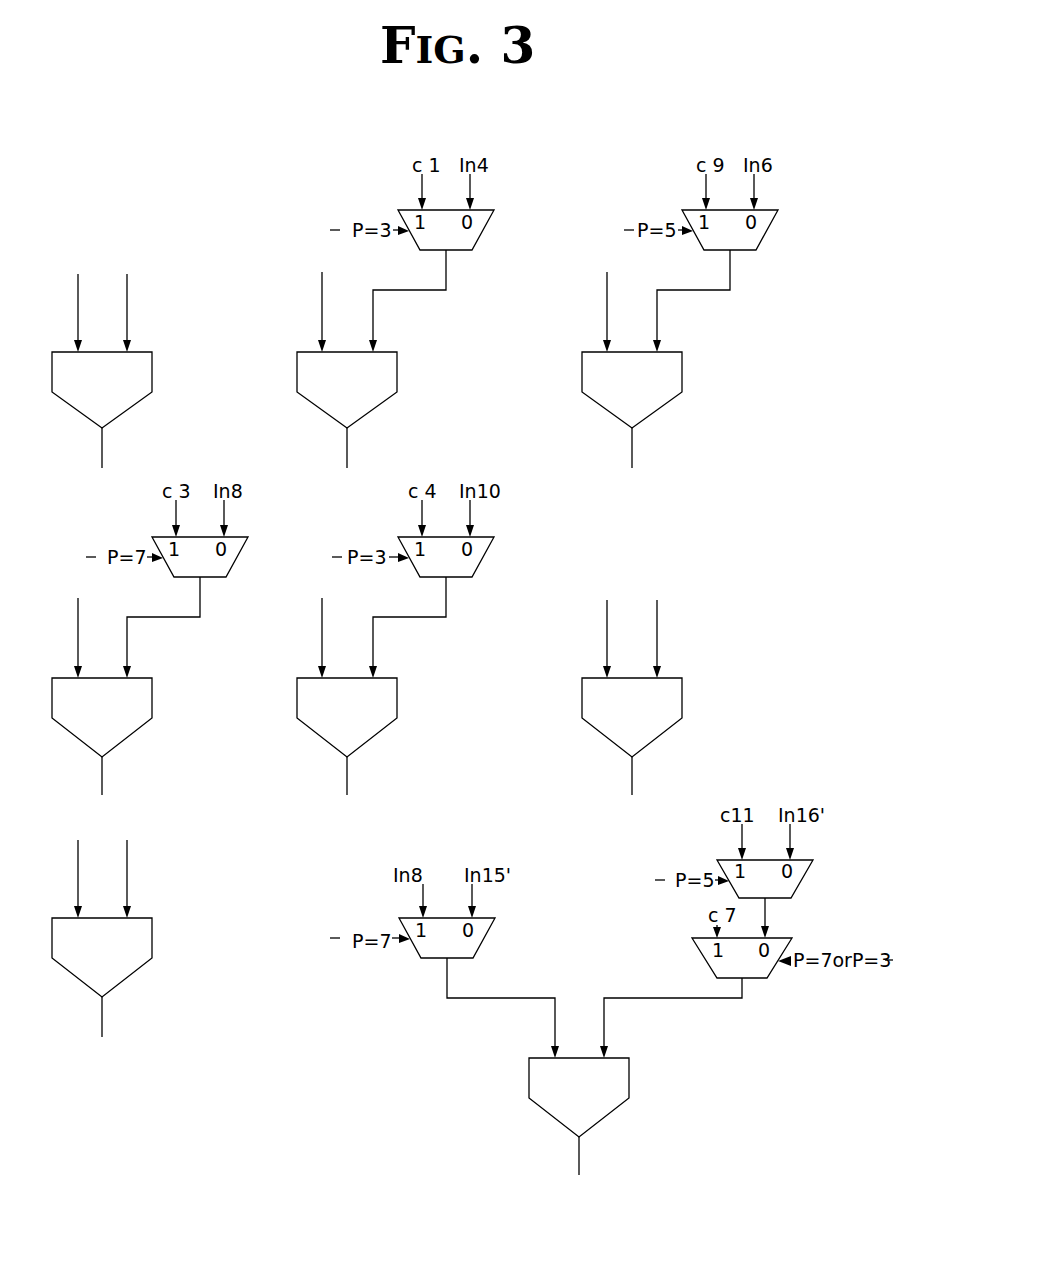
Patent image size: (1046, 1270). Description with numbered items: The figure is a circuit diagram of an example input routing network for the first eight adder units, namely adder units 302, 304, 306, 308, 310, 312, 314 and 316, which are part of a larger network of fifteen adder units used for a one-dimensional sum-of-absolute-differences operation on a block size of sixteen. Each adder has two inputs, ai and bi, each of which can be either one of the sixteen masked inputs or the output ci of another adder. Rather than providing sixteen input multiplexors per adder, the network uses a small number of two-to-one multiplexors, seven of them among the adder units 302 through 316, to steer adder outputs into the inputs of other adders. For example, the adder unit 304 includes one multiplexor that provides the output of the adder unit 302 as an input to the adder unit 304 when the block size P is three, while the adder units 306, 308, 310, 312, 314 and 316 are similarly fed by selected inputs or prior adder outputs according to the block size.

The adder unit 302 is at (135, 407).
The adder unit 304 is at (390, 407).
The adder unit 306 is at (680, 405).
The adder unit 308 is at (142, 737).
The adder unit 310 is at (387, 738).
The adder unit 312 is at (677, 740).
The adder unit 314 is at (137, 975).
The adder unit 316 is at (618, 1117).